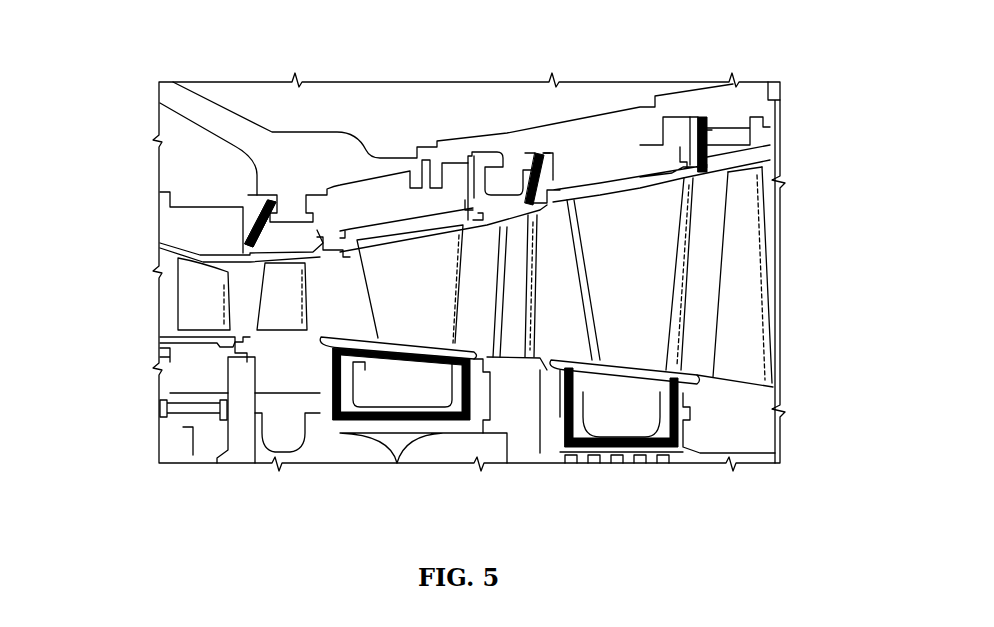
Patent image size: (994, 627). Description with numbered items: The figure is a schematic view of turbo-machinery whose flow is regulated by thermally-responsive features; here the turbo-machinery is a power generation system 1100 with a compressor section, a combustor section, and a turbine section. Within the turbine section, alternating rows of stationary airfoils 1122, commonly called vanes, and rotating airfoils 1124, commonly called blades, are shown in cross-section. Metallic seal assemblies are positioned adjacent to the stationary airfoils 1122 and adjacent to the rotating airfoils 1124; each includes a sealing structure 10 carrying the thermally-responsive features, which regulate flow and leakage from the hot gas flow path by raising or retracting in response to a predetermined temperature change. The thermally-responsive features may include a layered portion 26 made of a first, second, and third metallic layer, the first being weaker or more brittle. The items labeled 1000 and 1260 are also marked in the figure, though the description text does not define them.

The power generation system 1100 is at (151, 104).
The seal 1000 is at (269, 195).
The sealing structure 10 is at (540, 184).
The layered portion 26 is at (743, 167).
The seal 1260 is at (256, 218).
The stationary airfoils 1122 is at (185, 299).
The rotating airfoils 1124 is at (265, 321).